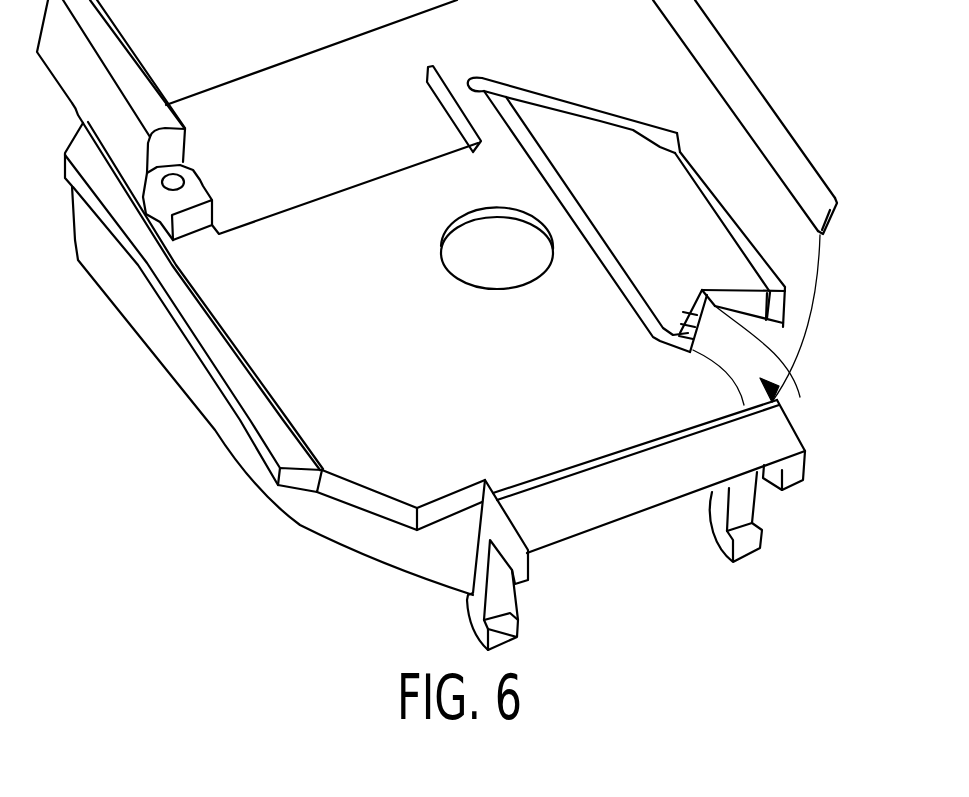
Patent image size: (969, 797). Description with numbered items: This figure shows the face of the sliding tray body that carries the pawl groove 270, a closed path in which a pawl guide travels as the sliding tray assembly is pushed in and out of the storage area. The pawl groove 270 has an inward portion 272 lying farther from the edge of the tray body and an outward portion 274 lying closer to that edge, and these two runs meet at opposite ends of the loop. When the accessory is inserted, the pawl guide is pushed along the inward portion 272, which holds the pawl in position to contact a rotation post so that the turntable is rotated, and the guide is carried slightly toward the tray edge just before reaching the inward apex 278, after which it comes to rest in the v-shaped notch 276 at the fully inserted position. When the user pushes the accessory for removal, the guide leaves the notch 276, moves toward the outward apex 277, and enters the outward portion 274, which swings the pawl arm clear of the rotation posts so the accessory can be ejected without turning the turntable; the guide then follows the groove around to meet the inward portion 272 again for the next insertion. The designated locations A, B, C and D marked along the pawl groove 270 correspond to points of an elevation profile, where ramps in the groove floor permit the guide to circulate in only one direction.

The pawl groove 270 is at (597, 106).
The inward portion 272 is at (602, 263).
The outward portion 274 is at (718, 182).
The v-shaped notch 276 is at (702, 288).
The outward apex 277 is at (782, 323).
The inward apex 278 is at (744, 405).
The location A is at (505, 100).
The location B is at (693, 350).
The location C is at (761, 368).
The location D is at (783, 325).